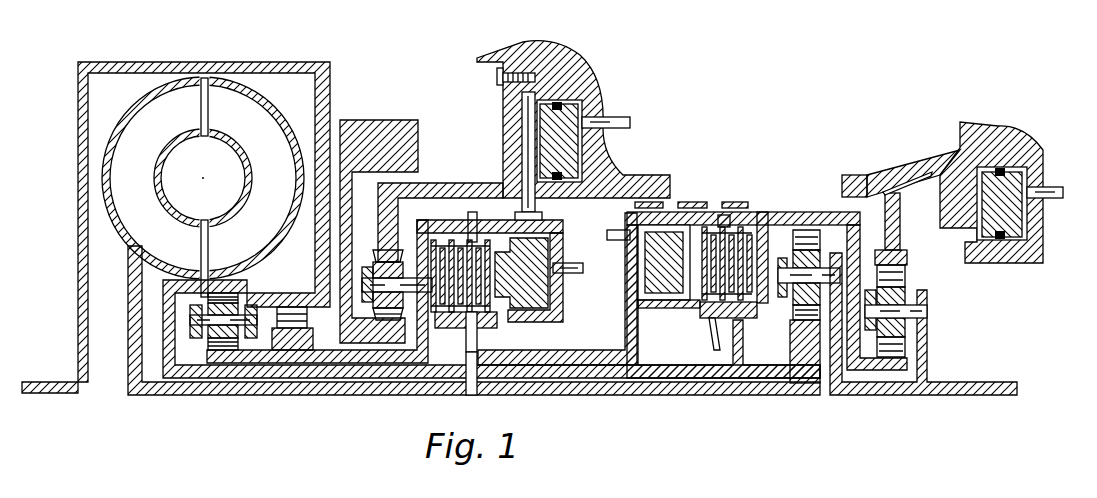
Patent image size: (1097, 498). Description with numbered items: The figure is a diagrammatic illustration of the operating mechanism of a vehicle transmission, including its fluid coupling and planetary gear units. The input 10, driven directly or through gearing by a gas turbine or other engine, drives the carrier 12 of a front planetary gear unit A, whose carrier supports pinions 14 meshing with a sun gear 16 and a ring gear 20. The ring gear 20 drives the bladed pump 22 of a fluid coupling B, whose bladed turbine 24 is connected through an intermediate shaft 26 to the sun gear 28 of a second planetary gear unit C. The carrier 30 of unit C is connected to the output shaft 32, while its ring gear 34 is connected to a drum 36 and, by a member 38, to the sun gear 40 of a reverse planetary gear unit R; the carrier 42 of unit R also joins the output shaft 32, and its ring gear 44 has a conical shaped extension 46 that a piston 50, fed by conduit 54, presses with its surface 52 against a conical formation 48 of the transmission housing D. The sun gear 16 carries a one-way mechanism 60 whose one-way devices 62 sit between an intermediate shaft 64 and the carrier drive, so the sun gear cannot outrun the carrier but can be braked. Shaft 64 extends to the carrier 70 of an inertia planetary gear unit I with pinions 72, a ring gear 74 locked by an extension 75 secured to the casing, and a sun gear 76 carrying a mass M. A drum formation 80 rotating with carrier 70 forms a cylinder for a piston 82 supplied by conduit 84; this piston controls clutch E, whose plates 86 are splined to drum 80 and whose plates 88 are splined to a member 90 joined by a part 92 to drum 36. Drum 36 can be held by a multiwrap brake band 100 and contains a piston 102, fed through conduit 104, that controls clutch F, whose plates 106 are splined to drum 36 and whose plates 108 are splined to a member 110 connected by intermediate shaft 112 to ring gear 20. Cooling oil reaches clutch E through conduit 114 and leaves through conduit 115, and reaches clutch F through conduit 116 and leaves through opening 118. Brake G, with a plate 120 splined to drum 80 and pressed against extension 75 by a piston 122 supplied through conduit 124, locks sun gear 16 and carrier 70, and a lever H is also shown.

The input 10 is at (55, 382).
The carrier 12 is at (257, 312).
The pinions 14 is at (243, 340).
The sun gear 16 is at (219, 350).
The ring gear 20 is at (208, 295).
The bladed pump 22 is at (274, 101).
The bladed turbine 24 is at (120, 128).
The intermediate shaft 26 is at (578, 388).
The sun gear 28 is at (796, 330).
The carrier 30 is at (833, 258).
The output shaft 32 is at (940, 395).
The ring gear 34 is at (800, 228).
The drum 36 is at (762, 212).
The member 38 is at (845, 252).
The sun gear 40 is at (900, 356).
The carrier 42 is at (928, 299).
The ring gear 44 is at (906, 262).
The conical shaped extension 46 is at (898, 186).
The conical formation 48 is at (917, 176).
The piston 50 is at (1022, 208).
The surface 52 is at (918, 192).
The conduit 54 is at (1052, 188).
The one-way mechanism 60 is at (320, 336).
The one-way devices 62 is at (292, 308).
The intermediate shaft 64 is at (343, 360).
The carrier 70 is at (424, 300).
The pinions 72 is at (400, 250).
The ring gear 74 is at (380, 245).
The extension 75 is at (522, 165).
The sun gear 76 is at (378, 316).
The drum formation 80 is at (550, 233).
The piston 82 is at (540, 290).
The conduit 84 is at (578, 268).
The plates 86 is at (482, 268).
The plates 88 is at (497, 305).
The member 90 is at (470, 326).
The part 92 is at (582, 352).
The multiwrap brake band 100 is at (672, 202).
The piston 102 is at (650, 268).
The conduit 104 is at (612, 232).
The plates 106 is at (740, 227).
The plates 108 is at (711, 320).
The member 110 is at (740, 320).
The intermediate shaft 112 is at (628, 378).
The conduit 114 is at (473, 386).
The conduit 115 is at (474, 212).
The conduit 116 is at (722, 340).
The opening 118 is at (723, 214).
The plate 120 is at (533, 150).
The piston 122 is at (577, 102).
The conduit 124 is at (620, 122).
The front planetary gear unit A is at (185, 354).
The fluid coupling B is at (236, 80).
The second planetary gear unit C is at (791, 300).
The transmission housing D is at (575, 76).
The clutch E is at (451, 205).
The clutch F is at (695, 319).
The brake G is at (503, 115).
The lever H is at (897, 156).
The inertia planetary gear unit I is at (375, 252).
The mass M is at (362, 122).
The reverse planetary gear unit R is at (925, 283).